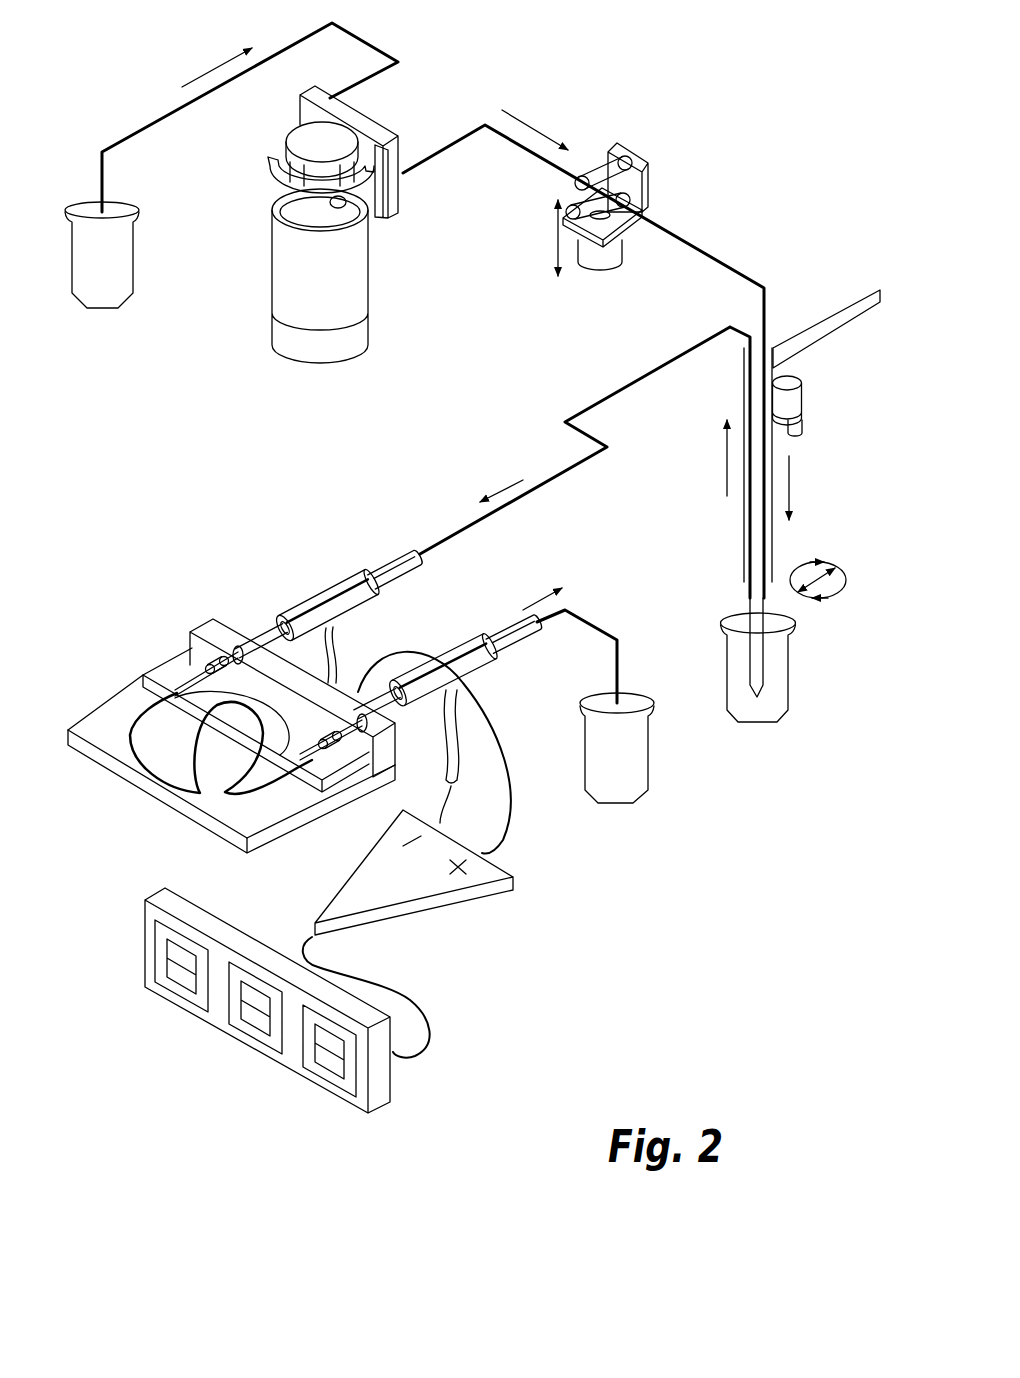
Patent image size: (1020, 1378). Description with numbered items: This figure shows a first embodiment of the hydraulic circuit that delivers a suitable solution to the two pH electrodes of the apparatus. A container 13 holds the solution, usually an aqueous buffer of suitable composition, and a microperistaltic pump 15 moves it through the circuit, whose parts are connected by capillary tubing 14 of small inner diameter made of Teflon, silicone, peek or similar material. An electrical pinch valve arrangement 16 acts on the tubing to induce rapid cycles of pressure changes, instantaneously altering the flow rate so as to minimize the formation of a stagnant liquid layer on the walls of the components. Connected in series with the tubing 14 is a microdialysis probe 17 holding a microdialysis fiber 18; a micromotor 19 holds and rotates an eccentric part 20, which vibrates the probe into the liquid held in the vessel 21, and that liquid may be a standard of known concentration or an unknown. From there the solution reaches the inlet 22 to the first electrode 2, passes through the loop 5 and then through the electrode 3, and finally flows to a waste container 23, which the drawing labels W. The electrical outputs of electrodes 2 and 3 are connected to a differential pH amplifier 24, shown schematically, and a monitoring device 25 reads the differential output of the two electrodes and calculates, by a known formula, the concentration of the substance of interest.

The first electrode 2 is at (317, 595).
The electrode 3 is at (460, 648).
The loop 5 is at (135, 763).
The container 13 is at (102, 308).
The capillary tubing 14 is at (368, 41).
The microperistaltic pump 15 is at (337, 363).
The electrical pinch valve arrangement 16 is at (648, 182).
The microdialysis probe 17 is at (785, 552).
The microdialysis fiber 18 is at (773, 607).
The micromotor 19 is at (808, 382).
The eccentric part 20 is at (808, 425).
The container 21 is at (795, 687).
The inlet 22 is at (453, 533).
The waste container 23 is at (620, 805).
The differential pH amplifier 24 is at (413, 915).
The monitoring device 25 is at (257, 1050).
The waste W is at (648, 760).